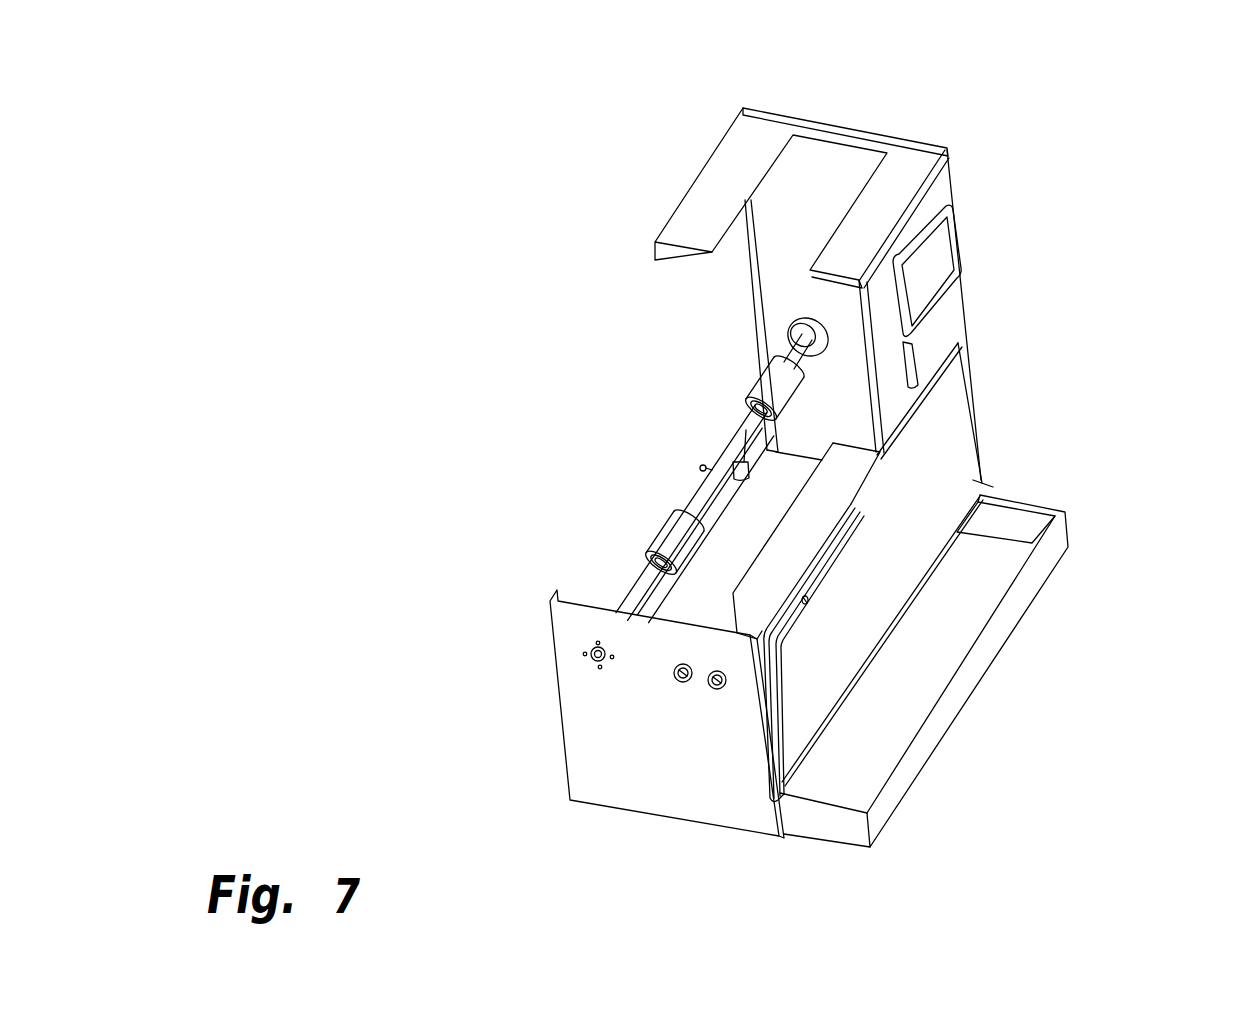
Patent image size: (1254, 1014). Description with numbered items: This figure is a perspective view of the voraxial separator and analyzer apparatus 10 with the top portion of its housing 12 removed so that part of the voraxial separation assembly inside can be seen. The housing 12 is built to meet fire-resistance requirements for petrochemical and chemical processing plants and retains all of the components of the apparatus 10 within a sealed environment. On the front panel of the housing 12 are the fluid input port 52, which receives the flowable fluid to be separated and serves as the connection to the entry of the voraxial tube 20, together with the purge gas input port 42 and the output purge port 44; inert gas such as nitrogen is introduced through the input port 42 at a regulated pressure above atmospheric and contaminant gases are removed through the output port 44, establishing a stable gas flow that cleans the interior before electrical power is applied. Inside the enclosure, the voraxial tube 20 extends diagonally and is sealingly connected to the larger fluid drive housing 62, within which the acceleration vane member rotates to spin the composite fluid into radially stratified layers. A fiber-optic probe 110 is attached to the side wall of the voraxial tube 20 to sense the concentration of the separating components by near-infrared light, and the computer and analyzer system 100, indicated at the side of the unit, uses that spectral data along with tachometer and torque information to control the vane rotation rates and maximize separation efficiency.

The voraxial separator and analyzer apparatus 10 is at (1107, 148).
The housing 12 is at (960, 460).
The voraxial tube 20 is at (743, 428).
The purge gas input port 42 is at (677, 672).
The output purge port 44 is at (710, 686).
The fluid input port 52 is at (592, 657).
The fluid drive housing 62 is at (782, 380).
The computer and analyzer system 100 is at (962, 373).
The fiber-optic probe 110 is at (748, 452).